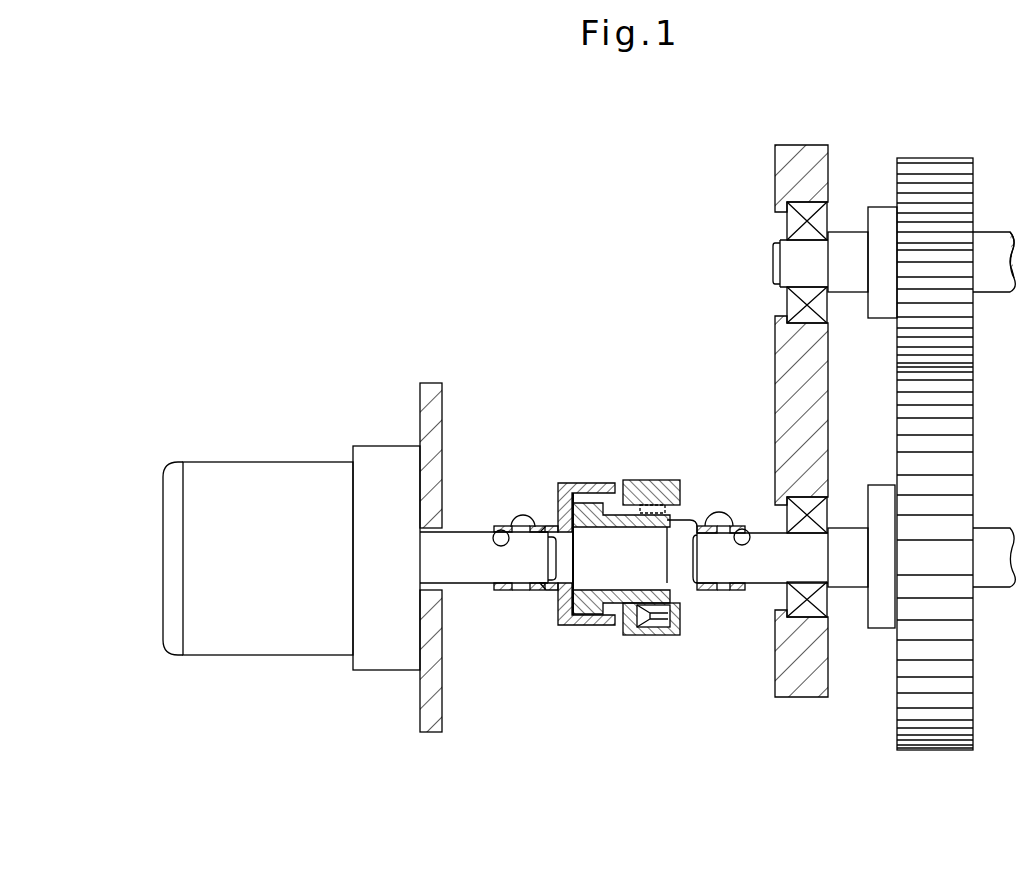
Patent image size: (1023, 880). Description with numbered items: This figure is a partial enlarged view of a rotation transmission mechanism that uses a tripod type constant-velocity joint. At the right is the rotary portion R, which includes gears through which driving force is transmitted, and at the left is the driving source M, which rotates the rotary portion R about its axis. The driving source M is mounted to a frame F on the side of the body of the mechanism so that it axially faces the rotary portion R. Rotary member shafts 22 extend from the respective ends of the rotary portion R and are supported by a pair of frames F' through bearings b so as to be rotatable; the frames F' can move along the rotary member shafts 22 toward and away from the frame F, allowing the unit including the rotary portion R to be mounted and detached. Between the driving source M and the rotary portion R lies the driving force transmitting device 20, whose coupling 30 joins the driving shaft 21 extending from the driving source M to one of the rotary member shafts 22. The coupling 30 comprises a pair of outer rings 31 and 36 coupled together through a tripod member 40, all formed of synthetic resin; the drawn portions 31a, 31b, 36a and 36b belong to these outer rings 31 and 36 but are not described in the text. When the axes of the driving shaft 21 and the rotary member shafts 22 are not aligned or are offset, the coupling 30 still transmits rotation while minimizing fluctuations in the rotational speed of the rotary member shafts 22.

The driving source M is at (289, 472).
The frame F is at (382, 585).
The frames F' is at (758, 458).
The bearings b is at (808, 612).
The rotary portion R is at (935, 712).
The driving force transmitting device 20 is at (657, 397).
The driving shaft 21 is at (470, 583).
The rotary member shafts 22 is at (712, 523).
The coupling 30 is at (629, 649).
The outer ring 31 is at (656, 480).
The sleeve lower portion 31a is at (737, 585).
The retaining ring 31b is at (754, 532).
The outer ring 36 is at (583, 483).
The retaining ring lower 36a is at (501, 590).
The retaining ring upper 36b is at (494, 527).
The tripod member 40 is at (652, 603).